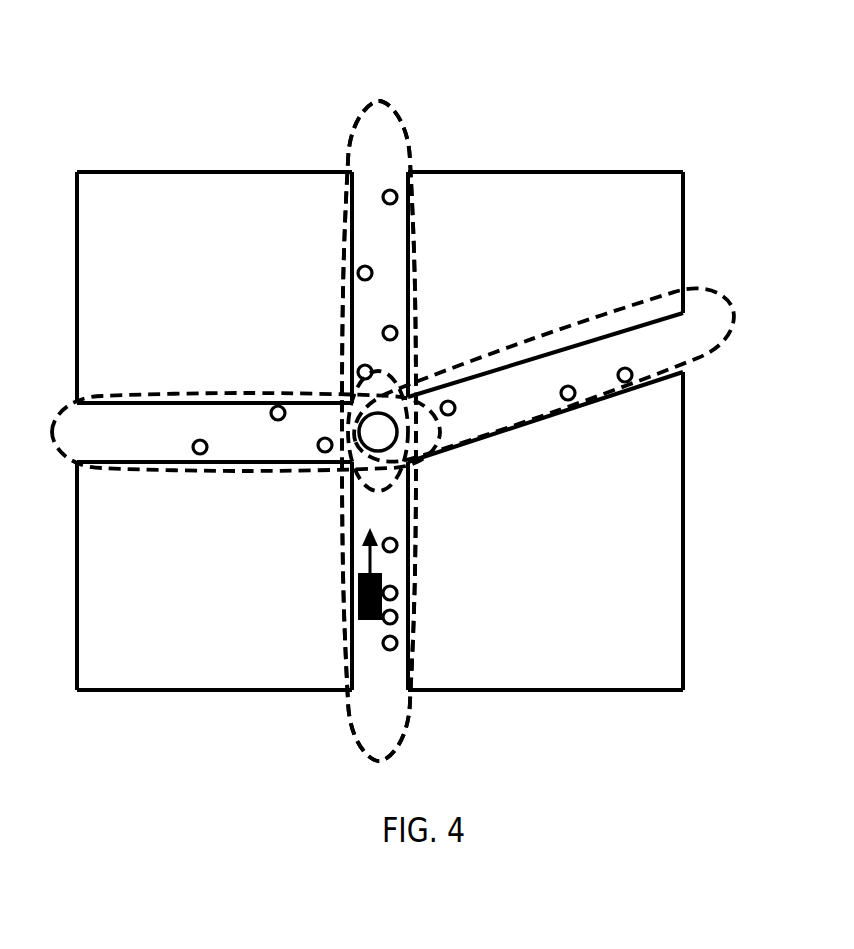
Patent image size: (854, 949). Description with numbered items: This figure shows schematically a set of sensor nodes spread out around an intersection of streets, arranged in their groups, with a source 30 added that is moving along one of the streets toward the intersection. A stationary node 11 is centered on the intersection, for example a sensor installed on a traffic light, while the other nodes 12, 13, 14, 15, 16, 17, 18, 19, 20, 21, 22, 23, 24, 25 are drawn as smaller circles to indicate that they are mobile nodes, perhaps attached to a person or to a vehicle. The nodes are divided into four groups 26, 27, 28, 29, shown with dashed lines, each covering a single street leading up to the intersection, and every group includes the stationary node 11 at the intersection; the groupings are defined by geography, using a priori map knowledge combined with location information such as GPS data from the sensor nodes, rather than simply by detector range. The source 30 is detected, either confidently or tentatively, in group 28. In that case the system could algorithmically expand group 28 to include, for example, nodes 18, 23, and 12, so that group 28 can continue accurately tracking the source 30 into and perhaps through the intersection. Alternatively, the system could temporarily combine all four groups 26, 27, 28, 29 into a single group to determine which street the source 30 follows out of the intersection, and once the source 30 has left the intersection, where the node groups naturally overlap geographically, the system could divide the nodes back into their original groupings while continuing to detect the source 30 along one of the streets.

The stationary node 11 is at (363, 419).
The mobile node 12 is at (359, 367).
The mobile node 13 is at (384, 328).
The mobile node 14 is at (359, 267).
The mobile node 15 is at (384, 191).
The mobile node 16 is at (273, 408).
The mobile node 17 is at (196, 453).
The mobile node 18 is at (320, 452).
The mobile node 19 is at (397, 643).
The mobile node 20 is at (397, 616).
The mobile node 21 is at (397, 593).
The mobile node 22 is at (397, 545).
The mobile node 23 is at (454, 414).
The mobile node 24 is at (574, 400).
The mobile node 25 is at (632, 382).
The group 26 is at (370, 105).
The group 27 is at (63, 452).
The group 28 is at (407, 708).
The group 29 is at (692, 350).
The source 30 is at (367, 620).